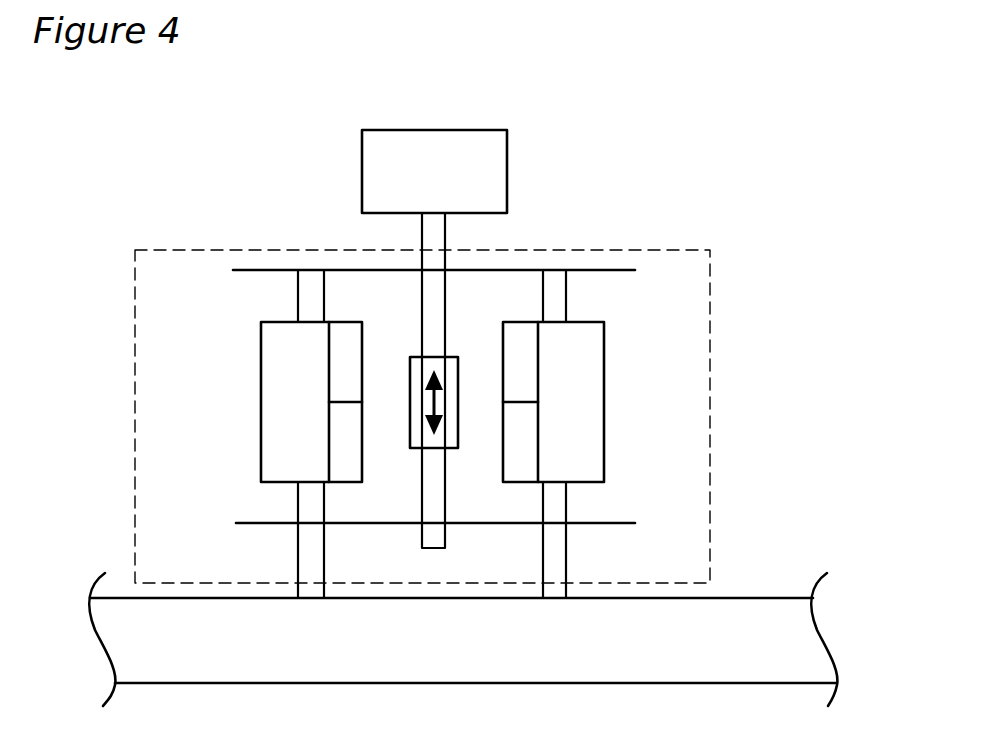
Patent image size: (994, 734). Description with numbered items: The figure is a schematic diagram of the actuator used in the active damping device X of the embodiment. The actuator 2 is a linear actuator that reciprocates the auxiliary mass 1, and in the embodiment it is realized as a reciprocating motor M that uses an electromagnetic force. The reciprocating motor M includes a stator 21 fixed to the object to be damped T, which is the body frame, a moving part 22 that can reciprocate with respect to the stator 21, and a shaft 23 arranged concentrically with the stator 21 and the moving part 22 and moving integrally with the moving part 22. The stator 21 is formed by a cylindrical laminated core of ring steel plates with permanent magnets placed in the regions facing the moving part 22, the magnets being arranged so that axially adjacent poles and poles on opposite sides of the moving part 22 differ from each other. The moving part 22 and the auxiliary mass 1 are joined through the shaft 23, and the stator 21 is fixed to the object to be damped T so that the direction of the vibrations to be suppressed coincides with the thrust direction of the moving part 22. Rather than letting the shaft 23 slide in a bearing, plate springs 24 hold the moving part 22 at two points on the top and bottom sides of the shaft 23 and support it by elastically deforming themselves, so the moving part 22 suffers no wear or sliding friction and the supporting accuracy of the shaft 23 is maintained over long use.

The auxiliary mass 1 is at (507, 168).
The actuator 2 is at (712, 271).
The reciprocating motor M is at (477, 416).
The active damping device X is at (477, 380).
The stator 21 is at (430, 400).
The moving part 22 is at (458, 425).
The shaft 23 is at (445, 238).
The plate springs 24 is at (252, 270).
The object to be damped T is at (723, 598).